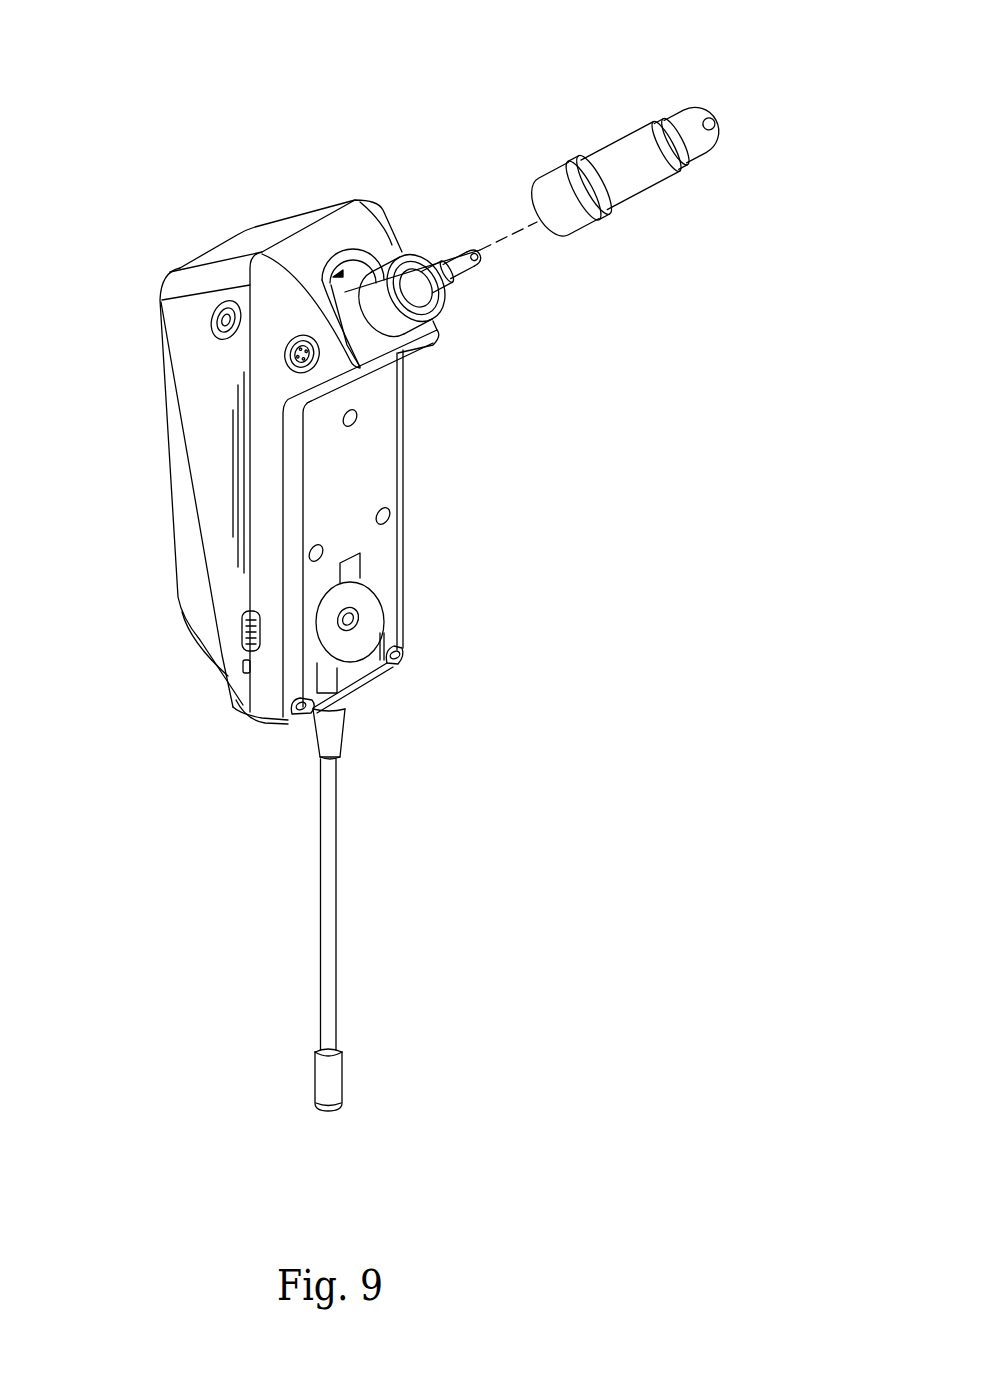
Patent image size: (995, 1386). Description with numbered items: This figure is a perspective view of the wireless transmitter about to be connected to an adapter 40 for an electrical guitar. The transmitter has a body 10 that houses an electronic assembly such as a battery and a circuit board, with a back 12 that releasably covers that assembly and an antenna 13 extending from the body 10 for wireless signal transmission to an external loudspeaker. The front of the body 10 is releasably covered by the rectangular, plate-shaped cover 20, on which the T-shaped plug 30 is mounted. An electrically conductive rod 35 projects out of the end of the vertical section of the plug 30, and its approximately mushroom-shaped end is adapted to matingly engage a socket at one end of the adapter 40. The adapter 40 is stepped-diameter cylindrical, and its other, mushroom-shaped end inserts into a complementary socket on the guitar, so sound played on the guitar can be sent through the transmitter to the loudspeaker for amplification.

The body 10 is at (207, 362).
The back 12 is at (188, 593).
The antenna 13 is at (323, 883).
The cover 20 is at (357, 670).
The plug 30 is at (370, 268).
The electrically conductive rod 35 is at (460, 277).
The adapter 40 is at (618, 132).